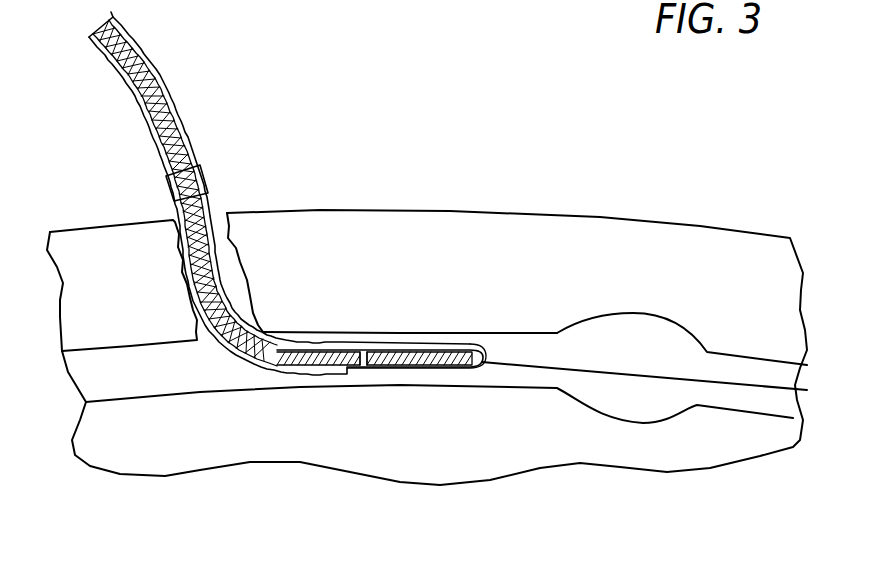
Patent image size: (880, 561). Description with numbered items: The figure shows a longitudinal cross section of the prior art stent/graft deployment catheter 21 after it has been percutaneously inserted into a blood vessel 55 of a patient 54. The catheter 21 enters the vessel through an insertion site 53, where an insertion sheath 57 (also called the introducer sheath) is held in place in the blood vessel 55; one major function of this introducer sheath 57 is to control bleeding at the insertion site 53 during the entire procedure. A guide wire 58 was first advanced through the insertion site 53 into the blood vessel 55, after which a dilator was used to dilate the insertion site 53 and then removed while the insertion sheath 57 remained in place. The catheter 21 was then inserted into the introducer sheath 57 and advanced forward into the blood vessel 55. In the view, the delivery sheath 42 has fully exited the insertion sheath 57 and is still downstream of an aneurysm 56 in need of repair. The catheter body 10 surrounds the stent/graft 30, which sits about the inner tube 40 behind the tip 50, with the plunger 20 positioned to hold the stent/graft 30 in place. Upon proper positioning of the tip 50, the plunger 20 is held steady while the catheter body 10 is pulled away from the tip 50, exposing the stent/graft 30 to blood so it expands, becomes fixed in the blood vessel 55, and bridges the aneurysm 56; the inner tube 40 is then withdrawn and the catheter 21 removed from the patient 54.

The catheter body 10 is at (183, 126).
The plunger 20 is at (352, 350).
The stent/graft deployment catheter 21 is at (124, 78).
The stent/graft 30 is at (397, 350).
The inner tube 40 is at (457, 352).
The delivery sheath 42 is at (428, 352).
The tip 50 is at (475, 350).
The insertion site 53 is at (218, 222).
The patient 54 is at (610, 217).
The blood vessel 55 is at (508, 335).
The aneurysm 56 is at (660, 318).
The insertion sheath 57 is at (207, 180).
The guide wire 58 is at (613, 365).